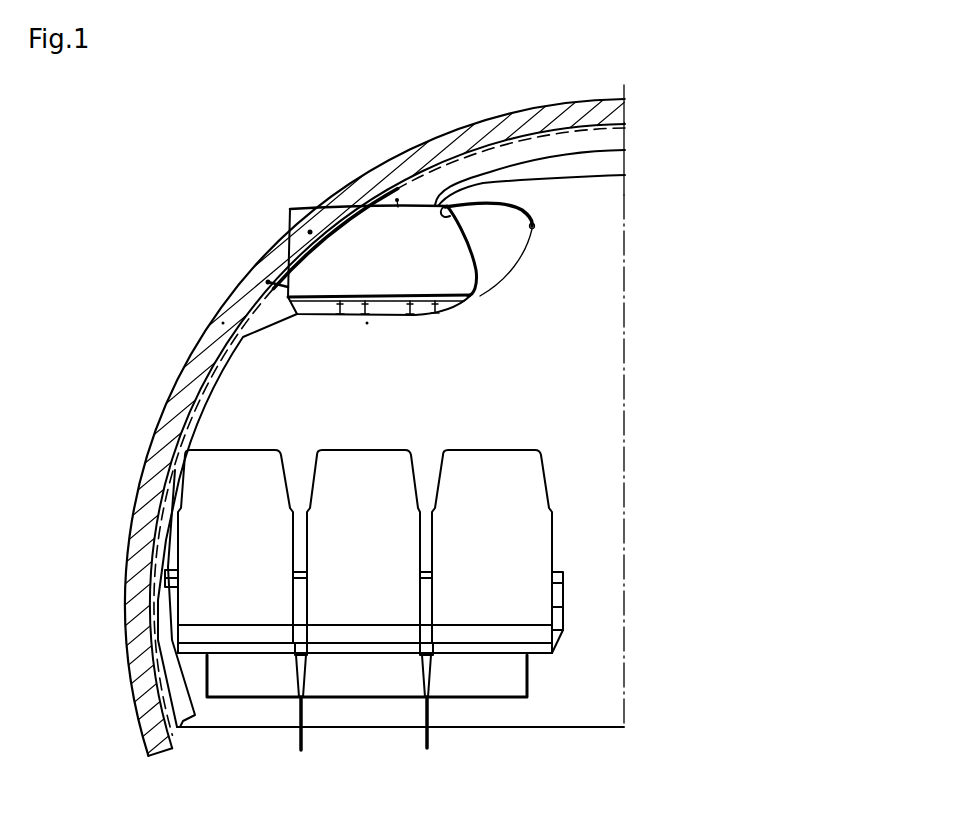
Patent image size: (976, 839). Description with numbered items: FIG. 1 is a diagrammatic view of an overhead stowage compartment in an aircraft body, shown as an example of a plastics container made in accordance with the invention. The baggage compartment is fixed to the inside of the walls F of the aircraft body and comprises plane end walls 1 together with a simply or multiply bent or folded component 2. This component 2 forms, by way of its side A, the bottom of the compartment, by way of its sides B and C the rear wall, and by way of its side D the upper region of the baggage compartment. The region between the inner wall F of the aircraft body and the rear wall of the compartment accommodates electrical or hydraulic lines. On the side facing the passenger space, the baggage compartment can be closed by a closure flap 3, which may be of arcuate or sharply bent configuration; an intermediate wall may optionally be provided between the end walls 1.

The end wall 1 is at (353, 240).
The component 2 is at (277, 257).
The closure flap 3 is at (481, 205).
The side A is at (367, 323).
The side B is at (267, 282).
The side C is at (310, 232).
The side D is at (397, 195).
The wall of the aircraft body F is at (223, 323).